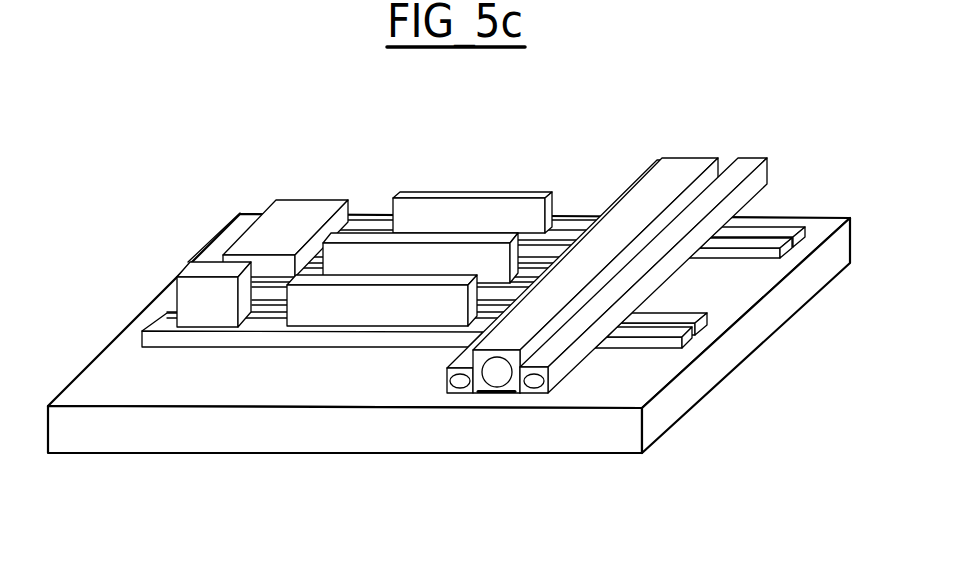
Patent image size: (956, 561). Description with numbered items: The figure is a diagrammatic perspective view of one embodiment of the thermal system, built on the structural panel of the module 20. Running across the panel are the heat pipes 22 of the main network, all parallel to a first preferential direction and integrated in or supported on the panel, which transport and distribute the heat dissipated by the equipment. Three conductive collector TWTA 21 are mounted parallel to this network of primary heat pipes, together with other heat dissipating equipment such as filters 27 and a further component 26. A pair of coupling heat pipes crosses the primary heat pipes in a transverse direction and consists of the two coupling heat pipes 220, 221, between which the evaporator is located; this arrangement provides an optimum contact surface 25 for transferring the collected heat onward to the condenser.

The module 20 is at (652, 455).
The conductive collector TWTA 21 is at (370, 223).
The heat pipes 22 is at (692, 350).
The contact surface 25 is at (493, 397).
The component 26 is at (310, 197).
The filters 27 is at (217, 244).
The coupling heat pipe 220 is at (453, 398).
The coupling heat pipe 221 is at (535, 398).